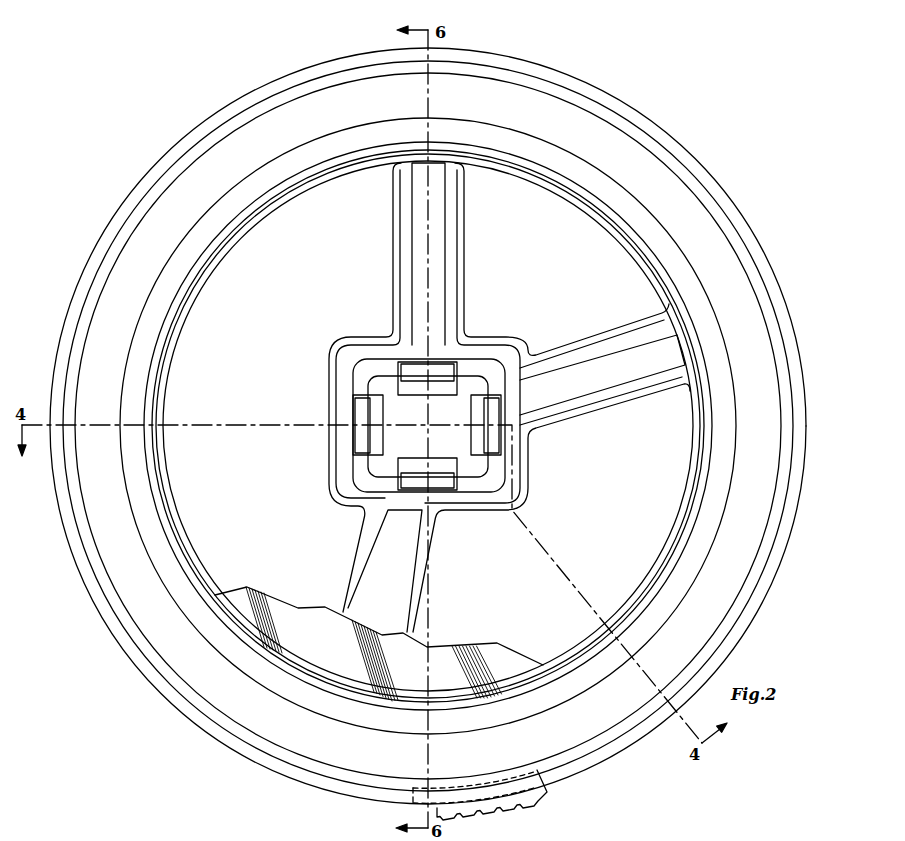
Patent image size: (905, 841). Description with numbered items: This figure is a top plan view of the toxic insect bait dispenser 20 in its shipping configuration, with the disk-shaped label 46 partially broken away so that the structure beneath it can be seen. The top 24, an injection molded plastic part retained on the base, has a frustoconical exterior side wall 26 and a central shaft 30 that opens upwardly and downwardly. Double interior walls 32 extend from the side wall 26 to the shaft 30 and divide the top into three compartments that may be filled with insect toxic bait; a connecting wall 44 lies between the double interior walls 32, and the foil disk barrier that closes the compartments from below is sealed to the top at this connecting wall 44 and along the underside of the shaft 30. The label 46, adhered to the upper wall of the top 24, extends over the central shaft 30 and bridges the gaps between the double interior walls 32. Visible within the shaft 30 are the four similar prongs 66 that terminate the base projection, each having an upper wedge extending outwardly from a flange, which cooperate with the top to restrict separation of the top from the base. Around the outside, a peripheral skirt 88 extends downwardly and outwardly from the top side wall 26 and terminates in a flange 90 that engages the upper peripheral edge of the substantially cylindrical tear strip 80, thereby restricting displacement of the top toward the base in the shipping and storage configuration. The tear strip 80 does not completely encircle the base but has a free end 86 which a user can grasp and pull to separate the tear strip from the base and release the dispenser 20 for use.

The toxic insect bait dispenser 20 is at (183, 90).
The top 24 is at (137, 183).
The frustoconical exterior side wall 26 is at (650, 210).
The central shaft 30 is at (485, 490).
The double interior walls 32 is at (418, 247).
The connecting wall 44 is at (590, 394).
The label 46 is at (478, 645).
The prongs 66 is at (384, 430).
The tear strip 80 is at (582, 772).
The free end 86 is at (433, 810).
The peripheral skirt 88 is at (747, 278).
The flange 90 is at (745, 215).